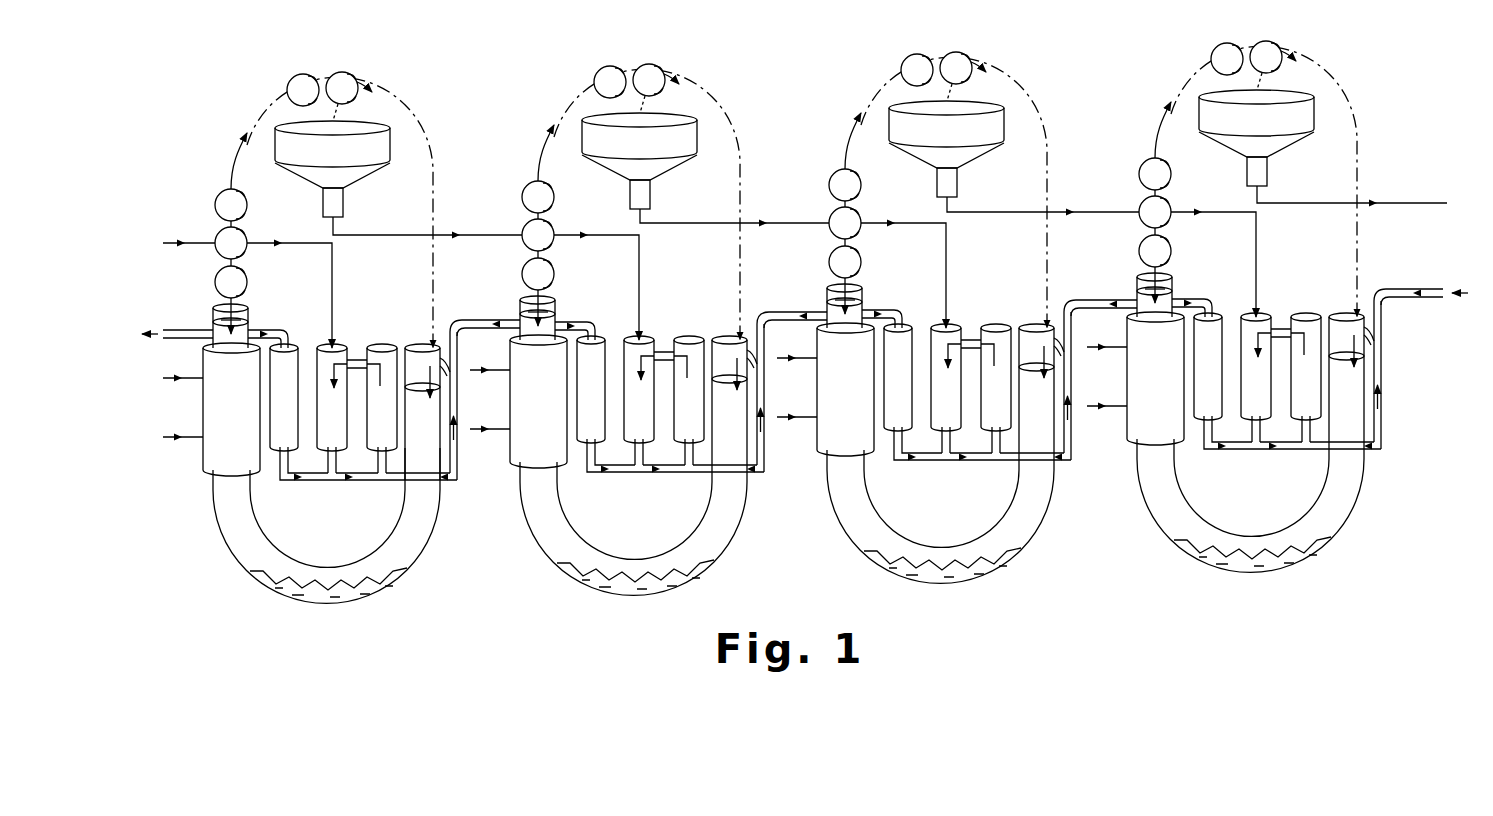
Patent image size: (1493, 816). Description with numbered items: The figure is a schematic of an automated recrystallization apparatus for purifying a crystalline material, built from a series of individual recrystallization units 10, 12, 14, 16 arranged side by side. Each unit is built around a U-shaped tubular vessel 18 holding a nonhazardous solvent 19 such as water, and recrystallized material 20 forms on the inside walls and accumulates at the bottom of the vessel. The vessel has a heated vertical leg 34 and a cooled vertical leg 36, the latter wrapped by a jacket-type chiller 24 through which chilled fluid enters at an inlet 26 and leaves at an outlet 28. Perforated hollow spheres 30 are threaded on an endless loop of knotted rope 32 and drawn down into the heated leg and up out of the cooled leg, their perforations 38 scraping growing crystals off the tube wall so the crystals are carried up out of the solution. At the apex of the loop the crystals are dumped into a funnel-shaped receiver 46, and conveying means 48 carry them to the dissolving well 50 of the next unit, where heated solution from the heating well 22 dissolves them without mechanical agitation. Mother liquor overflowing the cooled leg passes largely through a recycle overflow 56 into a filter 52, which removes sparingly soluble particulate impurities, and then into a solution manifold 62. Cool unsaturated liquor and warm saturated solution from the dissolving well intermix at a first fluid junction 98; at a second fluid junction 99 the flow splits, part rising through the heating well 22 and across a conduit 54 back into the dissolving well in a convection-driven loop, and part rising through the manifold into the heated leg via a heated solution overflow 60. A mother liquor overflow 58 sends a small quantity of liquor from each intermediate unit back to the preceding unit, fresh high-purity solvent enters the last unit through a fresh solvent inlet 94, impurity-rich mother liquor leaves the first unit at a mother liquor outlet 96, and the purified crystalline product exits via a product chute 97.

The first recrystallization unit 10 is at (326, 630).
The intermediate recrystallization unit 12 is at (633, 615).
The intermediate recrystallization unit 14 is at (935, 602).
The last recrystallization unit 16 is at (1243, 592).
The U-shaped tubular vessel 18 is at (329, 551).
The nonhazardous solvent 19 is at (430, 515).
The recrystallized material 20 is at (345, 602).
The heating well 22 is at (385, 335).
The jacket-type chiller 24 is at (205, 462).
The chiller inlet 26 is at (185, 378).
The chiller outlet 28 is at (185, 437).
The perforated hollow spheres 30 is at (172, 204).
The endless loop of knotted rope 32 is at (370, 93).
The heated vertical leg 34 is at (455, 455).
The cooled vertical leg 36 is at (222, 490).
The perforations 38 is at (240, 190).
The funnel-shaped receiver 46 is at (382, 145).
The conveying means 48 is at (481, 233).
The dissolving well 50 is at (322, 362).
The filter 52 is at (278, 425).
The conduit 54 is at (368, 363).
The recycle overflow 56 is at (218, 292).
The mother liquor overflow 58 is at (458, 322).
The heated solution overflow 60 is at (465, 375).
The solution manifold 62 is at (385, 533).
The fresh solvent inlet 94 is at (1392, 290).
The mother liquor outlet 96 is at (163, 330).
The product chute 97 is at (1400, 203).
The first fluid junction 98 is at (333, 473).
The second fluid junction 99 is at (382, 476).